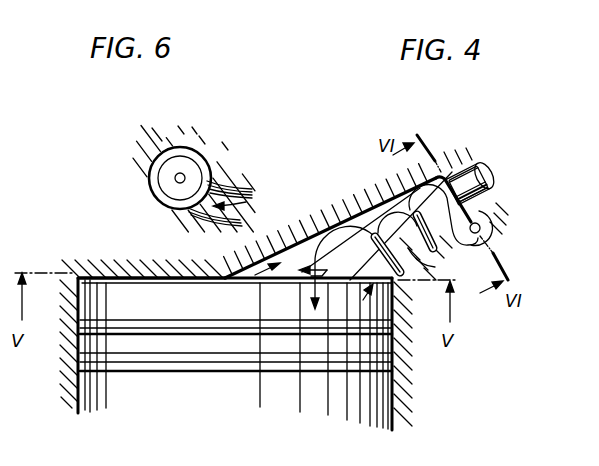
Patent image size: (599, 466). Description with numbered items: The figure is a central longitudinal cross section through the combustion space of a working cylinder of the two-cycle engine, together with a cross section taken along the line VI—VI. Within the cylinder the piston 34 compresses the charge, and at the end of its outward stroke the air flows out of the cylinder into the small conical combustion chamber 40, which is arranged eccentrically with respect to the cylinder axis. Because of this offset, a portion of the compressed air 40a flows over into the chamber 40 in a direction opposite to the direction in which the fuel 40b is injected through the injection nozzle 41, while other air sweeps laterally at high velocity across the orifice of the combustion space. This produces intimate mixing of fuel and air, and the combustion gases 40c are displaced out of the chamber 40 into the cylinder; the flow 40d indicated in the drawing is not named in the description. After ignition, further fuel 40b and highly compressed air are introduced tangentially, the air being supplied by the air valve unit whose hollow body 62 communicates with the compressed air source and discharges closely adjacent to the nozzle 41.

In FIG. 4, the piston 34 is at (152, 293).
In FIG. 4, the combustion chamber 40 is at (435, 267).
In FIG. 4, the portion of compressed air 40a is at (167, 277).
In FIG. 4, the fuel 40b is at (305, 236).
In FIG. 4, the combustion gases 40c is at (364, 302).
In FIG. 6, the roller with belt 40d is at (253, 200).
In FIG. 4, the roller with belt 40d is at (441, 172).
In FIG. 4, the injection nozzle 41 is at (497, 196).
In FIG. 4, the hollow body 62 is at (482, 228).